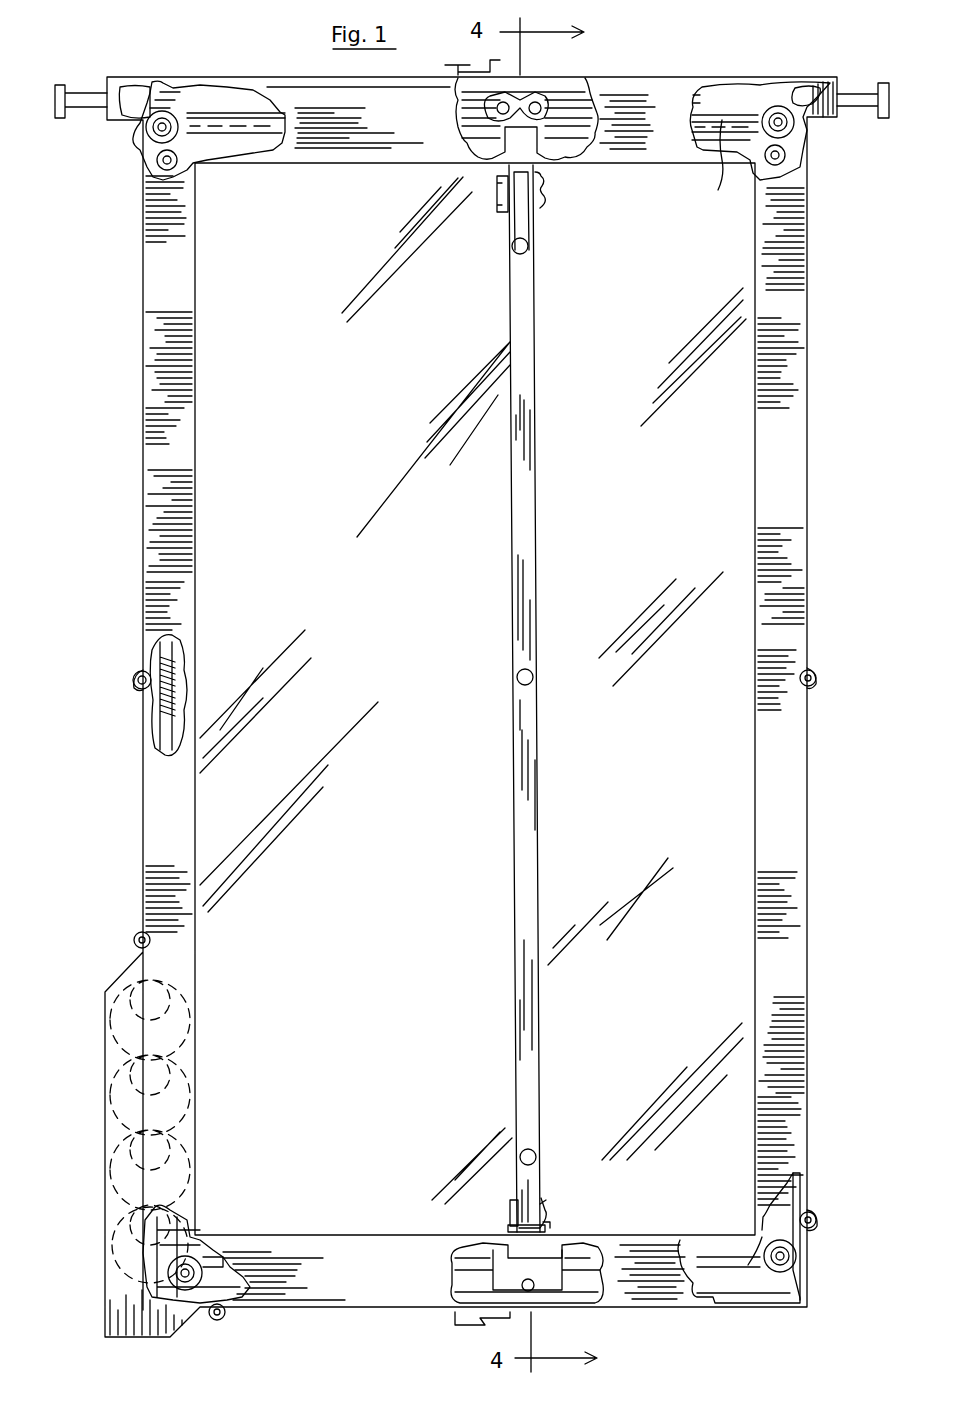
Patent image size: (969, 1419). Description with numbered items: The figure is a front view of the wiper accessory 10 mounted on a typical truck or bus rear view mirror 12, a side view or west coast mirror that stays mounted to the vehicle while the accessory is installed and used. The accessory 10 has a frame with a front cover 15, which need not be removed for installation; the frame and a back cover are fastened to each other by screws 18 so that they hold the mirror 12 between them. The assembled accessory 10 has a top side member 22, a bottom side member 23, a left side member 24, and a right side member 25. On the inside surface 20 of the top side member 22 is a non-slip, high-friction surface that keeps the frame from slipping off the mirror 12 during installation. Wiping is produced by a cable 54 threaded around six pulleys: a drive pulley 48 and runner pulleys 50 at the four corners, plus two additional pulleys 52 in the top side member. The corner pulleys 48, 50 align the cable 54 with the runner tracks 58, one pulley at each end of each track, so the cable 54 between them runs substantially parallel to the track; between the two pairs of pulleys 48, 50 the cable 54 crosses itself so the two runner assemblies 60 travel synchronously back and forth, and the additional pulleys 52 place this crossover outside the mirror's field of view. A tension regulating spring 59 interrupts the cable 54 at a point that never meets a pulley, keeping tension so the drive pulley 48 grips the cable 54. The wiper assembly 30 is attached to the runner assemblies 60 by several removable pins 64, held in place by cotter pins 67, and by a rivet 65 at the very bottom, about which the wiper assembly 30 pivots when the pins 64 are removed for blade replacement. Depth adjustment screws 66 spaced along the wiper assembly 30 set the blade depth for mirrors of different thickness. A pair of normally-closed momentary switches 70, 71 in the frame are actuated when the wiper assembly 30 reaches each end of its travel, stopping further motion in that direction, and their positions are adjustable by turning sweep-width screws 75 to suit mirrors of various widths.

The wiper accessory 10 is at (112, 460).
The rear view mirror 12 is at (379, 792).
The front cover 15 is at (697, 1286).
The screws 18 is at (133, 672).
The non-slip surface 20 is at (388, 168).
The top side member 22 is at (420, 132).
The bottom side member 23 is at (388, 1291).
The left side member 24 is at (182, 462).
The right side member 25 is at (795, 462).
The wiper assembly 30 is at (536, 455).
The drive pulley 48 is at (187, 1157).
The runner pulleys 50 is at (140, 125).
The additional pulleys 52 is at (150, 160).
The cable 54 is at (590, 98).
The runner tracks 58 is at (745, 1240).
The tension regulating spring 59 is at (172, 672).
The runner assemblies 60 is at (530, 1276).
The removable pins 64 is at (540, 196).
The rivet 65 is at (508, 1228).
The depth adjustment screws 66 is at (528, 245).
The cotter pins 67 is at (545, 178).
The momentary switch 70 is at (155, 92).
The momentary switch 71 is at (760, 131).
The sweep-width screws 75 is at (95, 92).